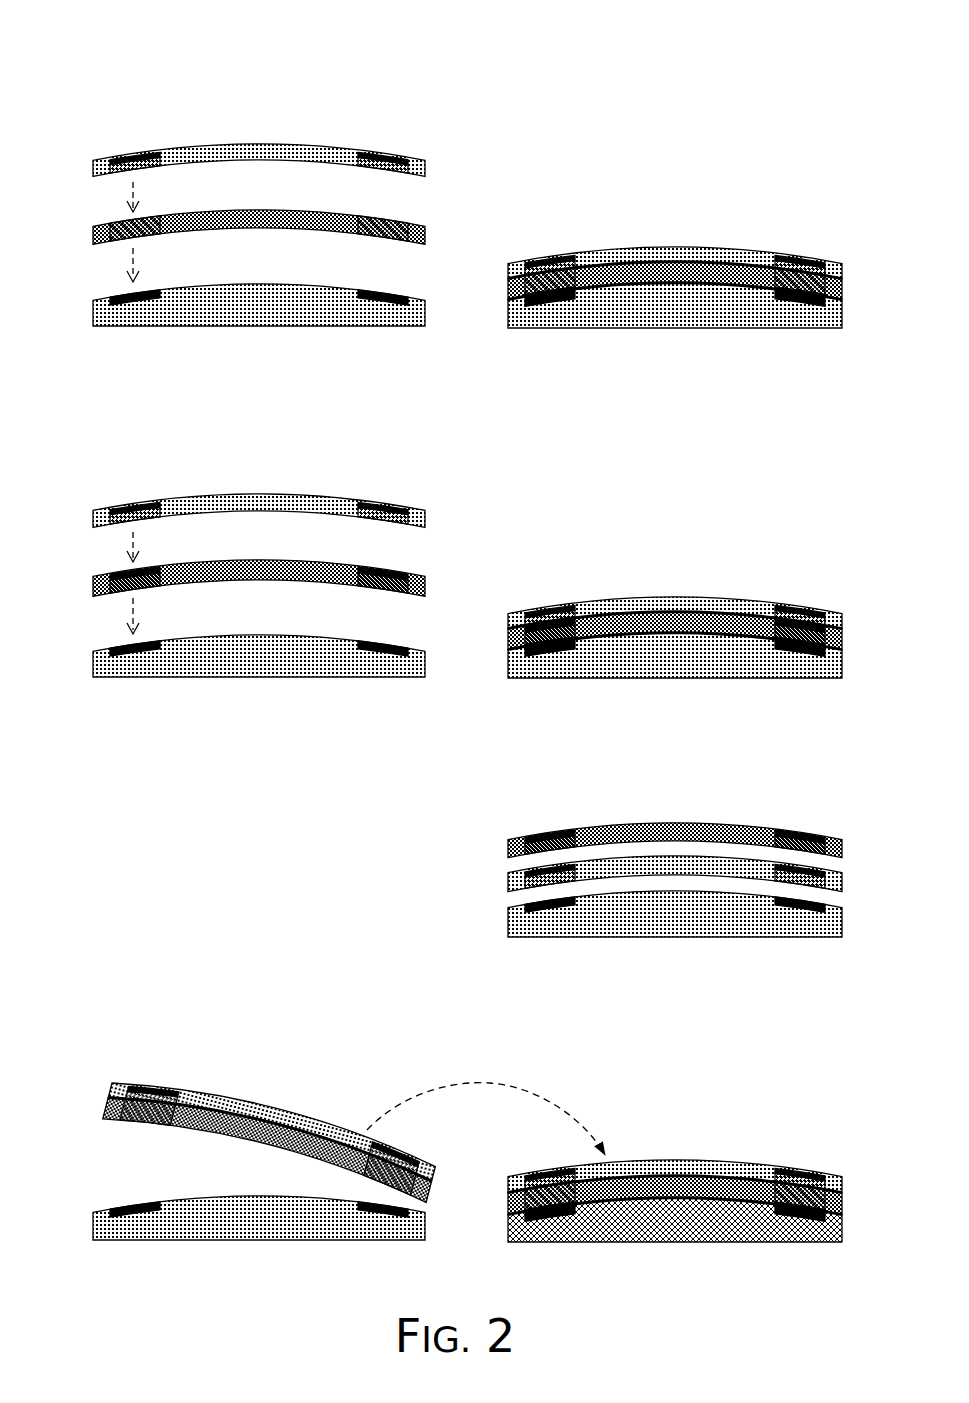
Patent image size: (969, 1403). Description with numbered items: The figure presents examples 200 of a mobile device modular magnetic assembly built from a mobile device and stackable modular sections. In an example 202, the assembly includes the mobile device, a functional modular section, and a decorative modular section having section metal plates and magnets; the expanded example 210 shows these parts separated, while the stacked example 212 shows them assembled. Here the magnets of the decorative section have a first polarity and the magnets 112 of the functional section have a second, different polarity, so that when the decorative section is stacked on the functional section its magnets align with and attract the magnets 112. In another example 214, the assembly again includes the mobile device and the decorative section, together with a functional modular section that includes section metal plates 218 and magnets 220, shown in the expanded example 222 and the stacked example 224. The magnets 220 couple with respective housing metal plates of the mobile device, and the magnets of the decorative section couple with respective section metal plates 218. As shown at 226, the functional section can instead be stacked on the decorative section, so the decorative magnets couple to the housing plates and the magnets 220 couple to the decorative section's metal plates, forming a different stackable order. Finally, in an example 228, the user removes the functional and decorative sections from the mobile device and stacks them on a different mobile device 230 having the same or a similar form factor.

The magnets of the functional modular section 112 is at (118, 228).
The examples of the mobile device modular magnetic assembly 200 is at (740, 97).
The example 202 is at (508, 132).
The expanded example 210 is at (150, 98).
The stacked example 212 is at (752, 214).
The example 214 is at (515, 480).
The section metal plates 218 is at (116, 578).
The magnets 220 is at (165, 588).
The expanded example 222 is at (150, 452).
The stacked example 224 is at (752, 565).
The different stackable order 226 is at (752, 792).
The example 228 is at (575, 1075).
The different mobile device 230 is at (654, 1270).